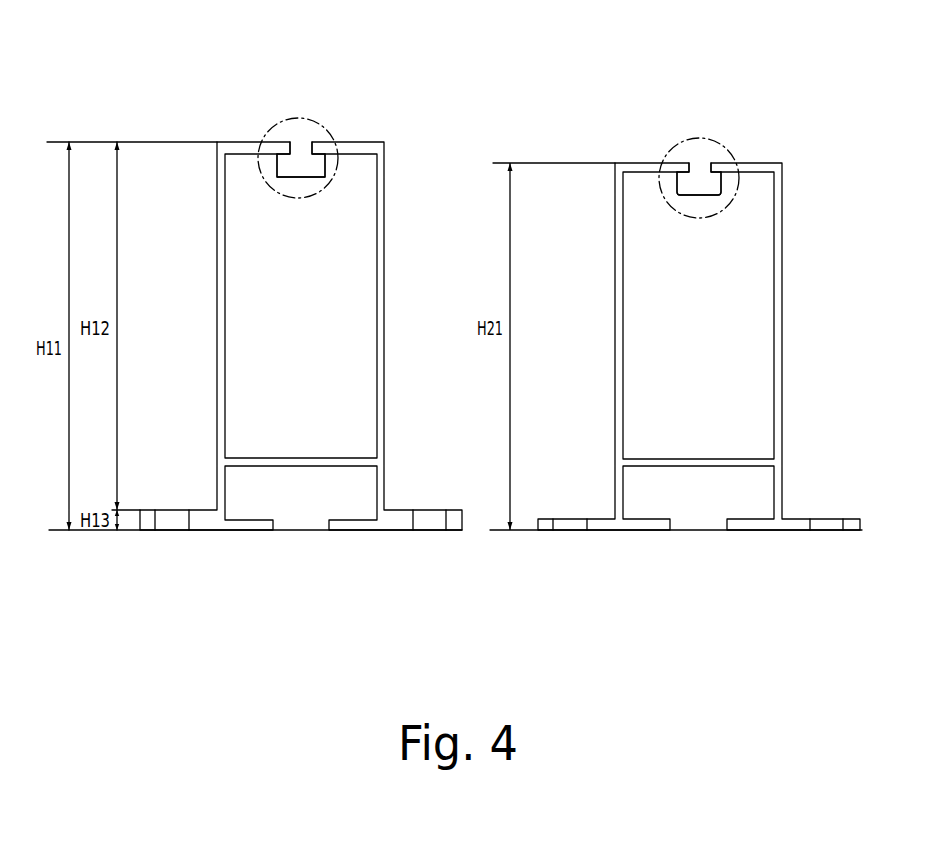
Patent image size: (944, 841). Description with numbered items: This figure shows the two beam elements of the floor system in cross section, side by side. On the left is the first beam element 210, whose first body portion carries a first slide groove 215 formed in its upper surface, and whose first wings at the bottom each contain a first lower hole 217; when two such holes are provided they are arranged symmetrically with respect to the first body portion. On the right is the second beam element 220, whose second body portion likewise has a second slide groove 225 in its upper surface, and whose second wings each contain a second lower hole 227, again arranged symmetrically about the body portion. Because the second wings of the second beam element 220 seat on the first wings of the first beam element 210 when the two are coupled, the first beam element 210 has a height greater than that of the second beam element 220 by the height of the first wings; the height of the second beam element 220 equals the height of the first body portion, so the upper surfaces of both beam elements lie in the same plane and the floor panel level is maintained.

The first beam element 210 is at (301, 314).
The first slide groove 215 is at (298, 118).
The first lower hole 217 is at (174, 523).
The second beam element 220 is at (699, 324).
The second slide groove 225 is at (698, 138).
The second lower hole 227 is at (568, 522).